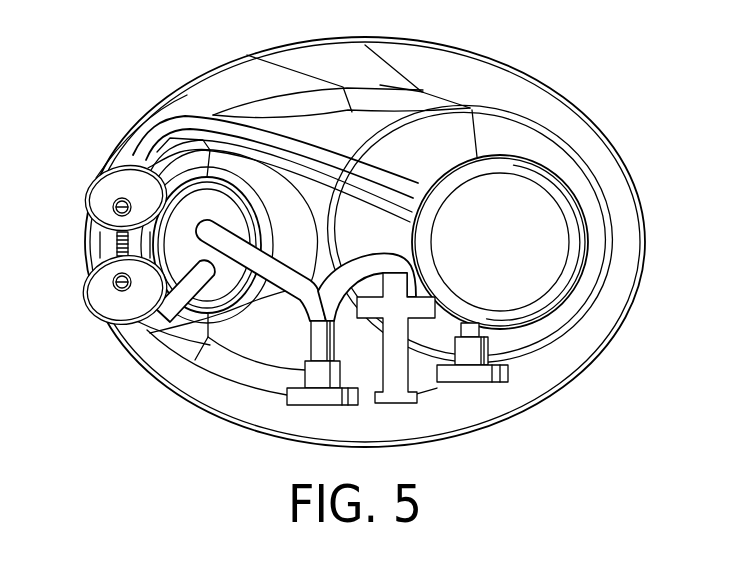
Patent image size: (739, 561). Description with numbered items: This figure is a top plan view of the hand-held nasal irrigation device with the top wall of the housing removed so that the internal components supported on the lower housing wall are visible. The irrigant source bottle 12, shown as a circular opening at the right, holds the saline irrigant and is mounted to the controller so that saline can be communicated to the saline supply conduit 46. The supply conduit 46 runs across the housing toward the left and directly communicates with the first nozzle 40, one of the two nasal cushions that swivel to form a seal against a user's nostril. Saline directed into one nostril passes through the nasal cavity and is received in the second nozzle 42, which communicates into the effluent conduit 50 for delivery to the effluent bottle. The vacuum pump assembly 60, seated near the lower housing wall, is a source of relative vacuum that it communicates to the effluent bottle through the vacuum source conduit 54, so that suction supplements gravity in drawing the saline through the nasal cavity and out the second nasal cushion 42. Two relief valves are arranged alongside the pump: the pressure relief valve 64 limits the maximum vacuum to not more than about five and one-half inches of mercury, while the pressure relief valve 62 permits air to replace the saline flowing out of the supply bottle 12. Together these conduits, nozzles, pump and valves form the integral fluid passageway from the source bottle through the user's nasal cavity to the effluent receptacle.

The irrigant source bottle 12 is at (540, 228).
The first nozzle 40 is at (102, 203).
The second nozzle 42 is at (102, 287).
The saline supply conduit 46 is at (290, 142).
The effluent conduit 50 is at (126, 333).
The vacuum source conduit 54 is at (288, 282).
The vacuum pump assembly 60 is at (398, 352).
The pressure relief valve 62 is at (483, 380).
The pressure relief valve 64 is at (312, 396).